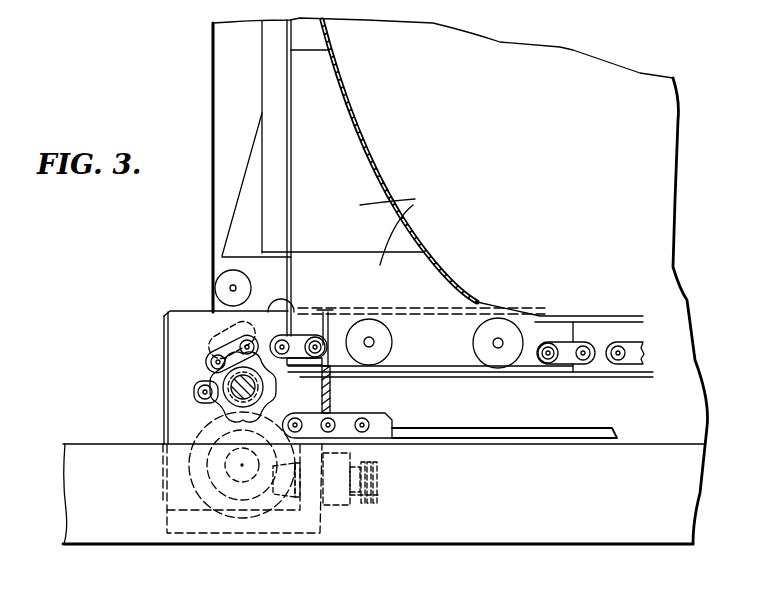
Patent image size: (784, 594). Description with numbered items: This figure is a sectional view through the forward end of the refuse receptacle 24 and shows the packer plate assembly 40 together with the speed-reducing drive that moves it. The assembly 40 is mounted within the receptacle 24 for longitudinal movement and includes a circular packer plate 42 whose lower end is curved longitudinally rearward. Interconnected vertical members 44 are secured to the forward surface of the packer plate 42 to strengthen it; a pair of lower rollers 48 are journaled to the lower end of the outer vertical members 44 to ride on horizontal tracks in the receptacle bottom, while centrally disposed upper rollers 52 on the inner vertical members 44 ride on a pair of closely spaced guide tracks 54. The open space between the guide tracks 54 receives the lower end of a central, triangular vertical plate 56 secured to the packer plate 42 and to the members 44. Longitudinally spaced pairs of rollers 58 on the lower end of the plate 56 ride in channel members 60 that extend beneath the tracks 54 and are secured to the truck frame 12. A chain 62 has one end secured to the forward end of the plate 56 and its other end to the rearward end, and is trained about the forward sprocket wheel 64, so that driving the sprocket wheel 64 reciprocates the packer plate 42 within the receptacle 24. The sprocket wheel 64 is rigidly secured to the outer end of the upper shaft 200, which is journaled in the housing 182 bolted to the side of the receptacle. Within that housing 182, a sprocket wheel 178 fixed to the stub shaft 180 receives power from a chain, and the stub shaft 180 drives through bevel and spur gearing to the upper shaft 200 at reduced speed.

The truck frame 12 is at (481, 539).
The receptacle 24 is at (637, 86).
The packer plate assembly 40 is at (390, 122).
The packer plate 42 is at (377, 163).
The vertical members 44 is at (268, 75).
The lower rollers 48 is at (232, 337).
The upper rollers 52 is at (222, 284).
The guide tracks 54 is at (292, 296).
The vertical plate 56 is at (399, 231).
The rollers 58 is at (385, 343).
The channel members 60 is at (599, 326).
The chain 62 is at (345, 418).
The forward sprocket wheel 64 is at (215, 407).
The sprocket wheel 178 is at (380, 474).
The stub shaft 180 is at (353, 505).
The housing 182 is at (178, 340).
The upper shaft 200 is at (230, 377).